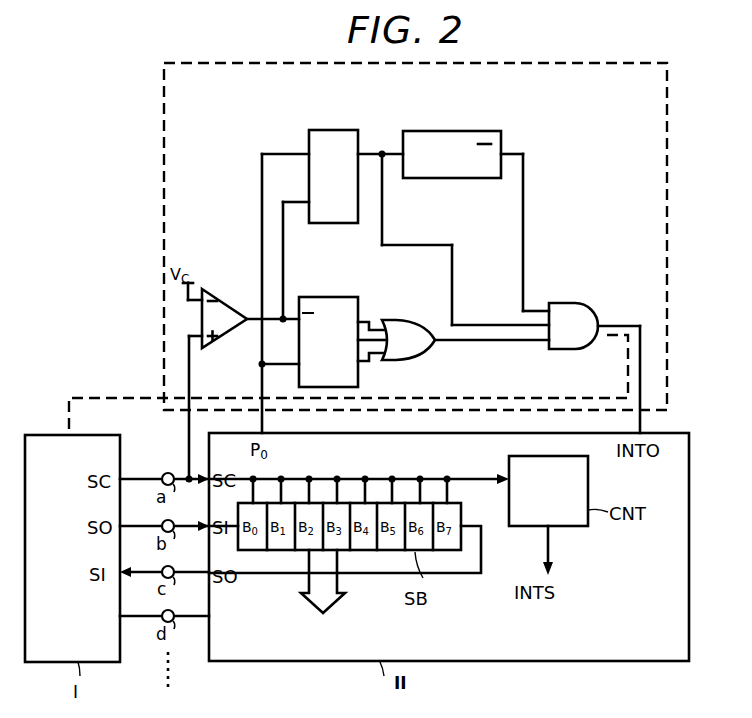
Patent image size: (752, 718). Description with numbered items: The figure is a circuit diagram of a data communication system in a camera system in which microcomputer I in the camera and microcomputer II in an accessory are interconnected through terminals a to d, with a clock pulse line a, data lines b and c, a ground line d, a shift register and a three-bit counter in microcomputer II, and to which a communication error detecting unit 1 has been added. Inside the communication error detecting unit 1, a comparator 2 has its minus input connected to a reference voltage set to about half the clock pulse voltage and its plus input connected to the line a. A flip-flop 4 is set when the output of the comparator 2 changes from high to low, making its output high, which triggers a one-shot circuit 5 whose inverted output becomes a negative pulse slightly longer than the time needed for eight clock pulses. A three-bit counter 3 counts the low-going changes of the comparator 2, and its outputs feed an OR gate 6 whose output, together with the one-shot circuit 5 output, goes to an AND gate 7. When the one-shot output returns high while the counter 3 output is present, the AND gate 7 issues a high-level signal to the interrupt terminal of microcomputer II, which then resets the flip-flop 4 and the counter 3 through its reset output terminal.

The communication error detecting unit 1 is at (672, 152).
The comparator 2 is at (228, 302).
The 3-bit counter 3 is at (345, 297).
The flip-flop 4 is at (332, 130).
The one-shot circuit 5 is at (455, 131).
The OR gate 6 is at (410, 318).
The AND gate 7 is at (578, 302).